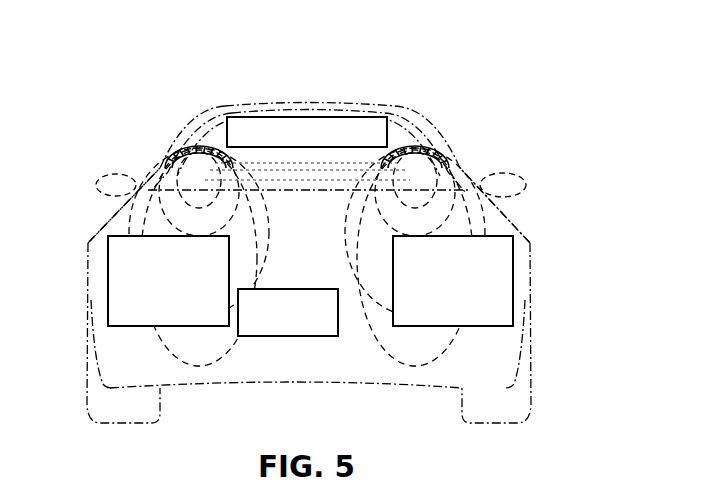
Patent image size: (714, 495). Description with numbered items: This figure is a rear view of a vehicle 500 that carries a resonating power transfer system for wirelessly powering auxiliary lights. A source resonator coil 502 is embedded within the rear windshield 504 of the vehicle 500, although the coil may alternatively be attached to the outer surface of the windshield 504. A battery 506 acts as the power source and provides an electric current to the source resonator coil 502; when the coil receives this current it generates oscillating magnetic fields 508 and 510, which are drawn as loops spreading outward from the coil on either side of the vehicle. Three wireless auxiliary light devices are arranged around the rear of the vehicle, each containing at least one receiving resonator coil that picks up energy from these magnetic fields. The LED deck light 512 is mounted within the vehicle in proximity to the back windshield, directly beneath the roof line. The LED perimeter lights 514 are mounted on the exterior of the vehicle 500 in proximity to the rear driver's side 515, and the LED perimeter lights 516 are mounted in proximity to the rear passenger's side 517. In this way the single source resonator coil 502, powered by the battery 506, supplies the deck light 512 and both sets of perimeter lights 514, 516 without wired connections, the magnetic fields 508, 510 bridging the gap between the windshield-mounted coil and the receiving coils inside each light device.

The vehicle 500 is at (100, 142).
The source resonator coil 502 is at (200, 140).
The windshield 504 is at (400, 122).
The battery 506 is at (292, 288).
The oscillating magnetic field 508 is at (422, 150).
The oscillating magnetic field 510 is at (216, 140).
The LED deck light 512 is at (308, 115).
The LED perimeter lights 514 is at (108, 282).
The rear driver's side 515 is at (88, 241).
The LED perimeter lights 516 is at (513, 280).
The rear passenger's side 517 is at (532, 245).